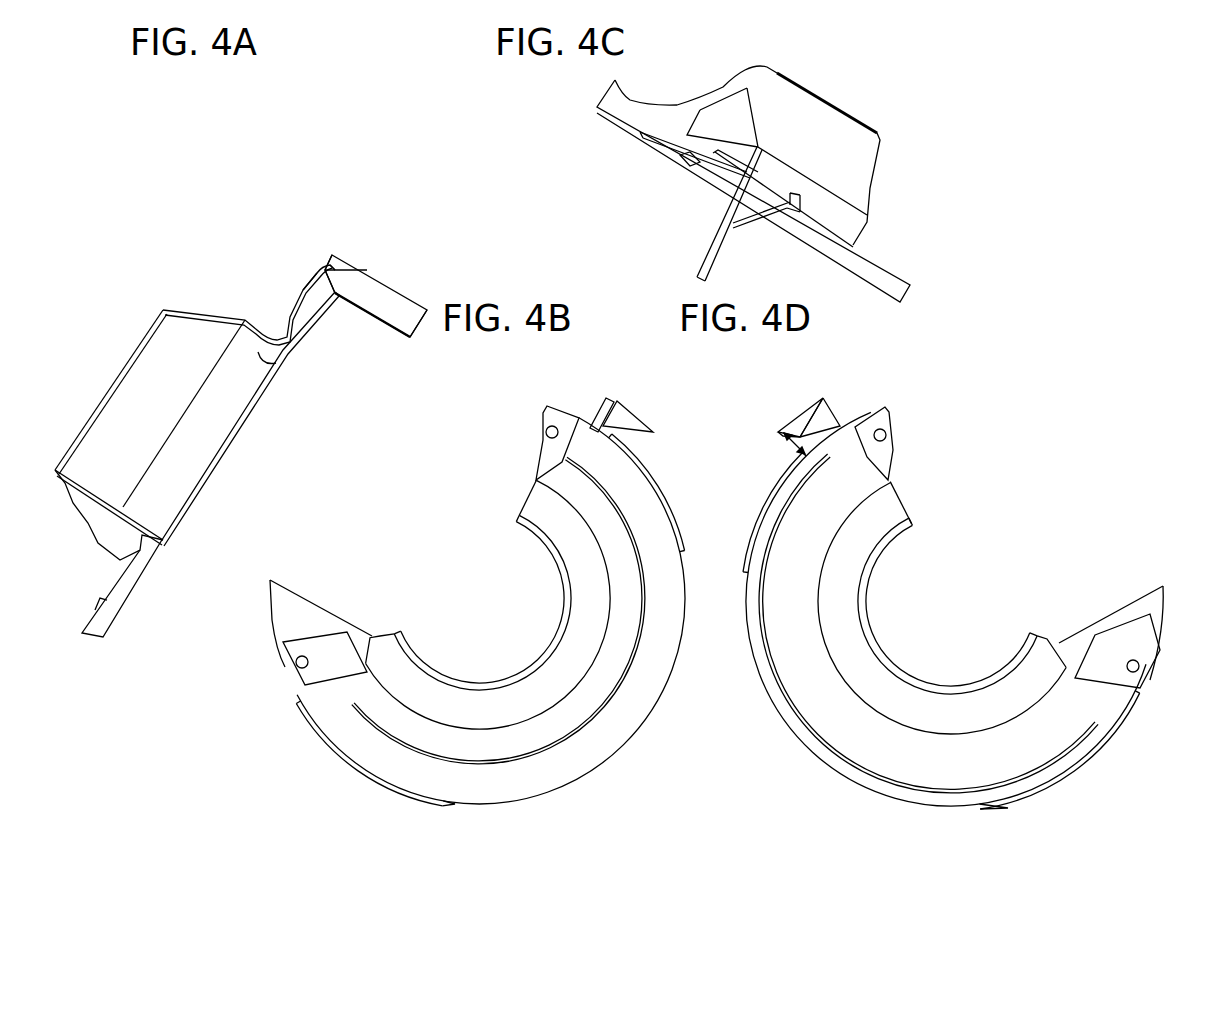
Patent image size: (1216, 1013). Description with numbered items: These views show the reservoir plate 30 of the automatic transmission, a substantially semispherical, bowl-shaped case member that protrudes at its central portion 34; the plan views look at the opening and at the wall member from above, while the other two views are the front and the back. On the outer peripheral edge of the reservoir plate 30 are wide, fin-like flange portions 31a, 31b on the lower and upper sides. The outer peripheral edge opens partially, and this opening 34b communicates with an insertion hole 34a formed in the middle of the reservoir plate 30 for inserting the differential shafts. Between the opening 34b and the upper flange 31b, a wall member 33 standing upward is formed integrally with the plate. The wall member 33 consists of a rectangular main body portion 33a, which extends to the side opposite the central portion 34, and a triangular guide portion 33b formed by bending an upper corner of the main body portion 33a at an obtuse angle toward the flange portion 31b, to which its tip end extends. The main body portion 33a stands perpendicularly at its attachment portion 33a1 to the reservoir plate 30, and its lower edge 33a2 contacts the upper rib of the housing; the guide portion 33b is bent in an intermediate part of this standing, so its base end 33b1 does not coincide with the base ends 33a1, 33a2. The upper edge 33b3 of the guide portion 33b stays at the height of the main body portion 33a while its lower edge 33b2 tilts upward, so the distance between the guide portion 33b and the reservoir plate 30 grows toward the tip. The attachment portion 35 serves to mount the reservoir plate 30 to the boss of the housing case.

In FIG. 4A, the reservoir plate 30 is at (140, 285).
In FIG. 4C, the reservoir plate 30 is at (838, 92).
In FIG. 4B, the reservoir plate 30 is at (633, 763).
In FIG. 4D, the reservoir plate 30 is at (767, 707).
In FIG. 4B, the flange portion 31a is at (325, 758).
In FIG. 4D, the flange portion 31a is at (1110, 747).
In FIG. 4B, the flange portion 31b is at (685, 530).
In FIG. 4D, the flange portion 31b is at (758, 554).
In FIG. 4A, the wall member 33 is at (449, 214).
In FIG. 4C, the wall member 33 is at (610, 187).
In FIG. 4B, the wall member 33 is at (665, 353).
In FIG. 4D, the wall member 33 is at (880, 361).
In FIG. 4A, the main body portion 33a is at (383, 300).
In FIG. 4C, the main body portion 33a is at (703, 255).
In FIG. 4B, the main body portion 33a is at (610, 398).
In FIG. 4D, the main body portion 33a is at (832, 412).
In FIG. 4A, the guide portion 33b is at (338, 258).
In FIG. 4C, the guide portion 33b is at (750, 207).
In FIG. 4B, the guide portion 33b is at (635, 403).
In FIG. 4D, the guide portion 33b is at (805, 408).
In FIG. 4A, the base end (attachment portion) 33a1 is at (313, 280).
In FIG. 4A, the lower edge (base end) 33a2 is at (392, 333).
In FIG. 4A, the base end 33b1 is at (353, 275).
In FIG. 4D, the lower edge 33b2 is at (780, 431).
In FIG. 4D, the upper edge 33b3 is at (805, 414).
In FIG. 4A, the central portion 34 is at (110, 387).
In FIG. 4C, the central portion 34 is at (863, 178).
In FIG. 4B, the central portion 34 is at (556, 732).
In FIG. 4D, the central portion 34 is at (850, 749).
In FIG. 4B, the insertion hole 34a is at (570, 612).
In FIG. 4D, the insertion hole 34a is at (900, 541).
In FIG. 4B, the opening 34b is at (539, 498).
In FIG. 4D, the opening 34b is at (900, 501).
In FIG. 4B, the attachment portion 35 is at (552, 432).